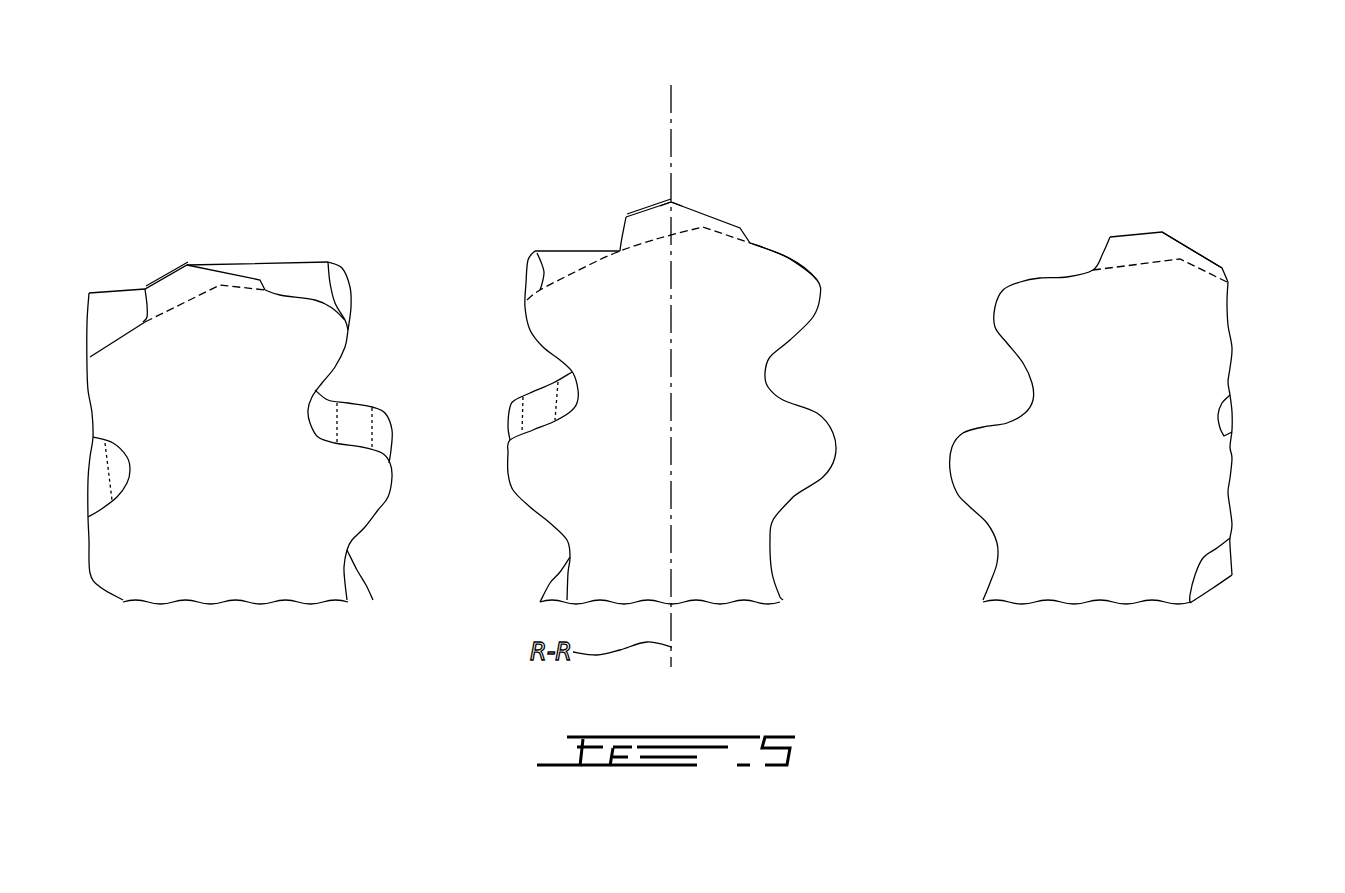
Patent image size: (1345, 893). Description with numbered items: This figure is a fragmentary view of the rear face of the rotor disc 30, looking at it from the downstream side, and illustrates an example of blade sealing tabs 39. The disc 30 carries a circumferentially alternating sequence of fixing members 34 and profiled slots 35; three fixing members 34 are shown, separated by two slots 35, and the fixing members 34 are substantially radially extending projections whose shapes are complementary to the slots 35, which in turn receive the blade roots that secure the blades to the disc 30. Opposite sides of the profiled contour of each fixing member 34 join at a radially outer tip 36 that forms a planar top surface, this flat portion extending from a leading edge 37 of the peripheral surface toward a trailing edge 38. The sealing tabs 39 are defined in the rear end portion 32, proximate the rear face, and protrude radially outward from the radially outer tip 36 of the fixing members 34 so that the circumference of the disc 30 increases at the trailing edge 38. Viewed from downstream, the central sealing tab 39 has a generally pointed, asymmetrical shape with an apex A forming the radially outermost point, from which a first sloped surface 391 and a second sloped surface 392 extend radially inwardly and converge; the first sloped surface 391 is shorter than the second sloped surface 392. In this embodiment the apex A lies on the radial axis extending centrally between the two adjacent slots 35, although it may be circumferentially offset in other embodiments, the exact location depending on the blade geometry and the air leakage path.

The rotor disc 30 is at (1250, 153).
The rear end portion 32 is at (737, 590).
The fixing members 34 is at (225, 475).
The profiled slots 35 is at (455, 462).
The radially outer tip 36 is at (800, 237).
The leading edge 37 is at (540, 250).
The trailing edge 38 is at (593, 260).
The sealing tabs 39 is at (702, 187).
The first sloped surface 391 is at (643, 212).
The second sloped surface 392 is at (720, 218).
The apex A is at (672, 202).